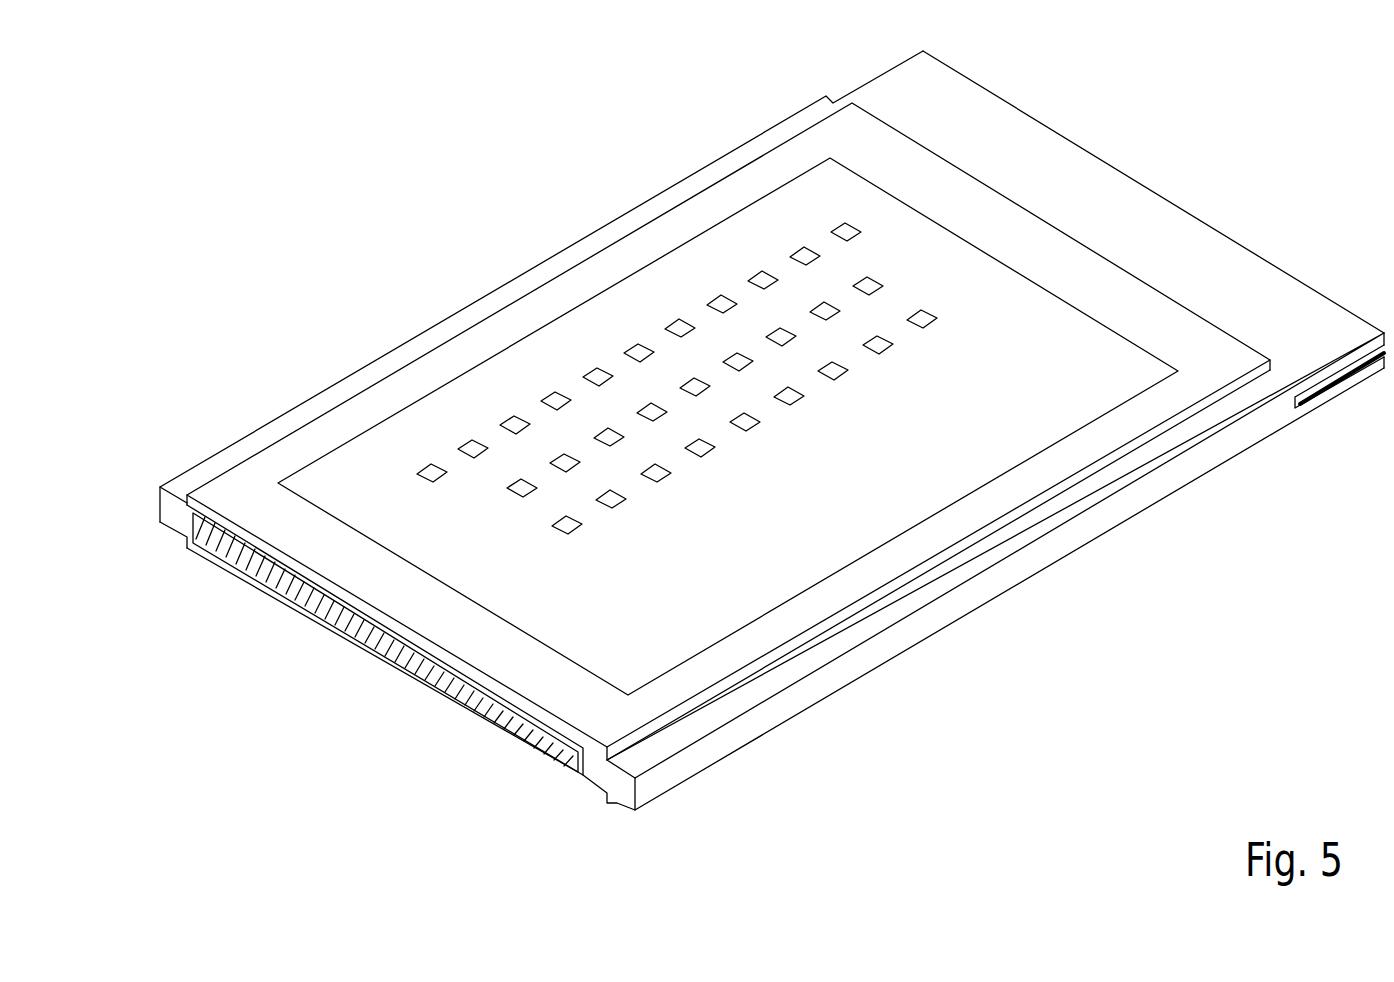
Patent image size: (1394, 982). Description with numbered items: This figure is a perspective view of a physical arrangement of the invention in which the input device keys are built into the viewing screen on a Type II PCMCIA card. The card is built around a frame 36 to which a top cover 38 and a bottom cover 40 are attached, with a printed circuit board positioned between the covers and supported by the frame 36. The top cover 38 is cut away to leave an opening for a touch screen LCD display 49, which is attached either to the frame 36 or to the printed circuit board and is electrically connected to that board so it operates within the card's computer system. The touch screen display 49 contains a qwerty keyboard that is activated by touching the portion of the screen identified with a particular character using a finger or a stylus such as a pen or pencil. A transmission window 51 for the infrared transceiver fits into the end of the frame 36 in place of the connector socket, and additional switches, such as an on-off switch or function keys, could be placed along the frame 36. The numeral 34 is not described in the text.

The tray 34 is at (518, 248).
The frame 36 is at (1212, 462).
The top cover 38 is at (872, 127).
The bottom cover 40 is at (230, 573).
The touch screen LCD display 49 is at (350, 460).
The transmission window 51 is at (985, 292).